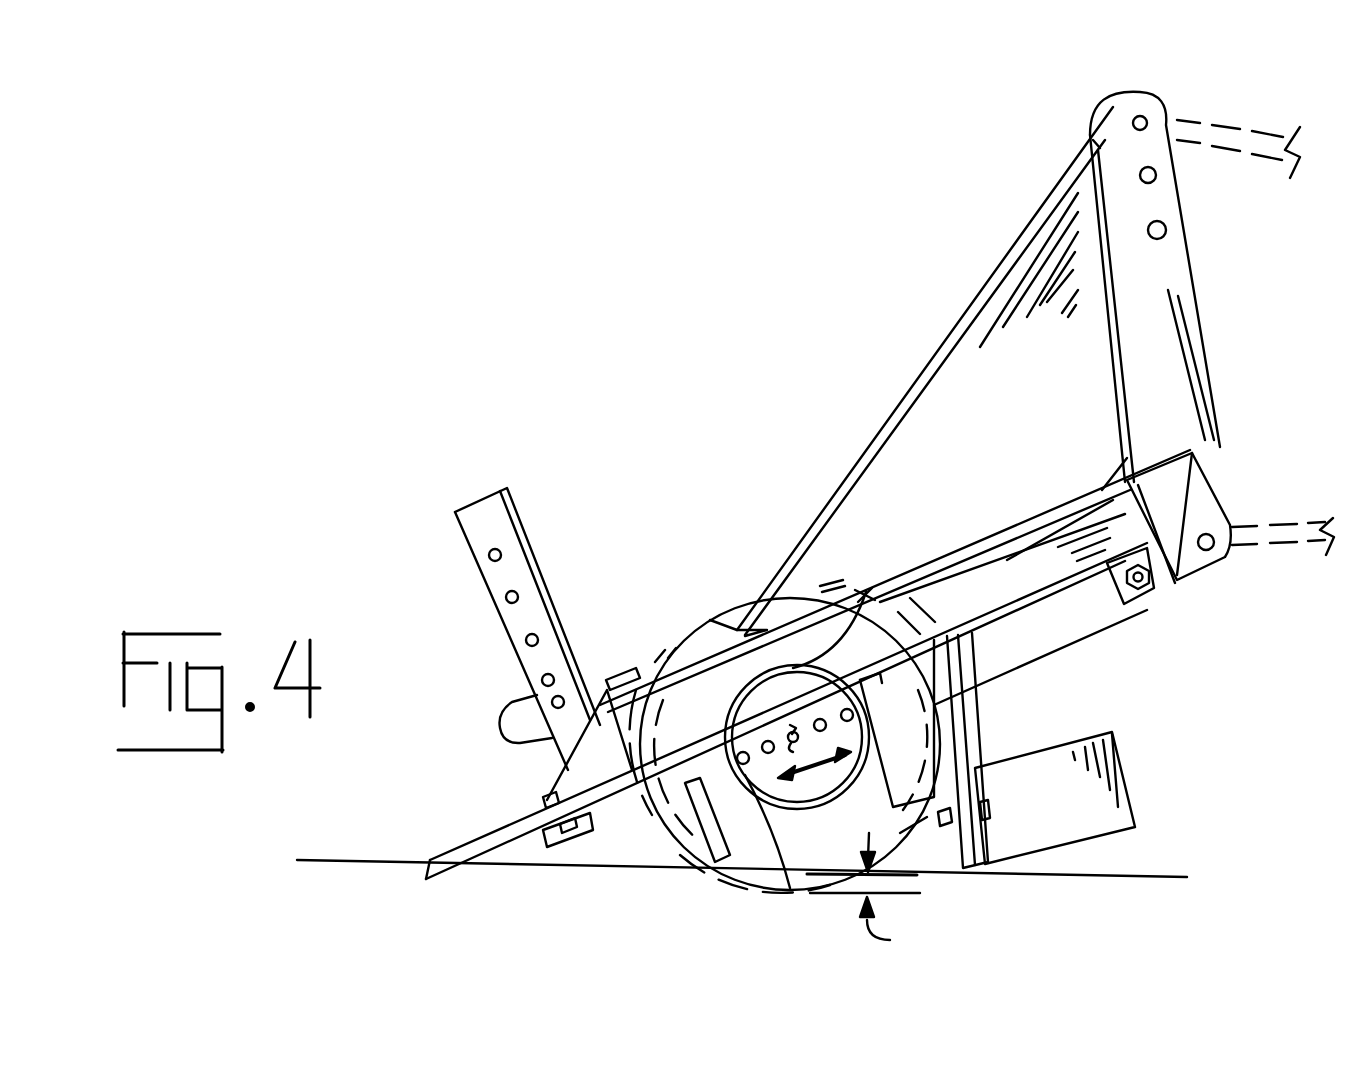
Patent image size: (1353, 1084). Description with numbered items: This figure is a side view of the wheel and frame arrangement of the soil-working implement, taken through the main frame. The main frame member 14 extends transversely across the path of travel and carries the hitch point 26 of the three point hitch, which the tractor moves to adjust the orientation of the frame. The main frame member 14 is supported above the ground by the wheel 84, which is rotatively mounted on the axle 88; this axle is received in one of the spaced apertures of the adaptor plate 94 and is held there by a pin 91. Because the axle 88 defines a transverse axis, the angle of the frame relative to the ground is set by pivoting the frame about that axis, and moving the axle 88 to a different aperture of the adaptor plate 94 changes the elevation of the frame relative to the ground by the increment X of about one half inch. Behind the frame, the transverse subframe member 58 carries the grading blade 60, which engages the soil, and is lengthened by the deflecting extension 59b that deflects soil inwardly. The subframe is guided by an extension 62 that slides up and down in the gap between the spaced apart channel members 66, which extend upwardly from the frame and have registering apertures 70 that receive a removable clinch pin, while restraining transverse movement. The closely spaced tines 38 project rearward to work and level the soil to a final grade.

The main frame member 14 is at (1233, 503).
The hitch point 26 is at (1133, 122).
The tines 38 is at (450, 860).
The transverse subframe member 58 is at (913, 732).
The deflecting extension 59b is at (1062, 822).
The grading blade 60 is at (972, 858).
The extension 62 is at (527, 726).
The channel members 66 is at (507, 563).
The registering apertures 70 is at (488, 555).
The wheel 84 is at (892, 822).
The axle 88 is at (790, 705).
The pin 91 is at (863, 598).
The adaptor plate 94 is at (763, 762).